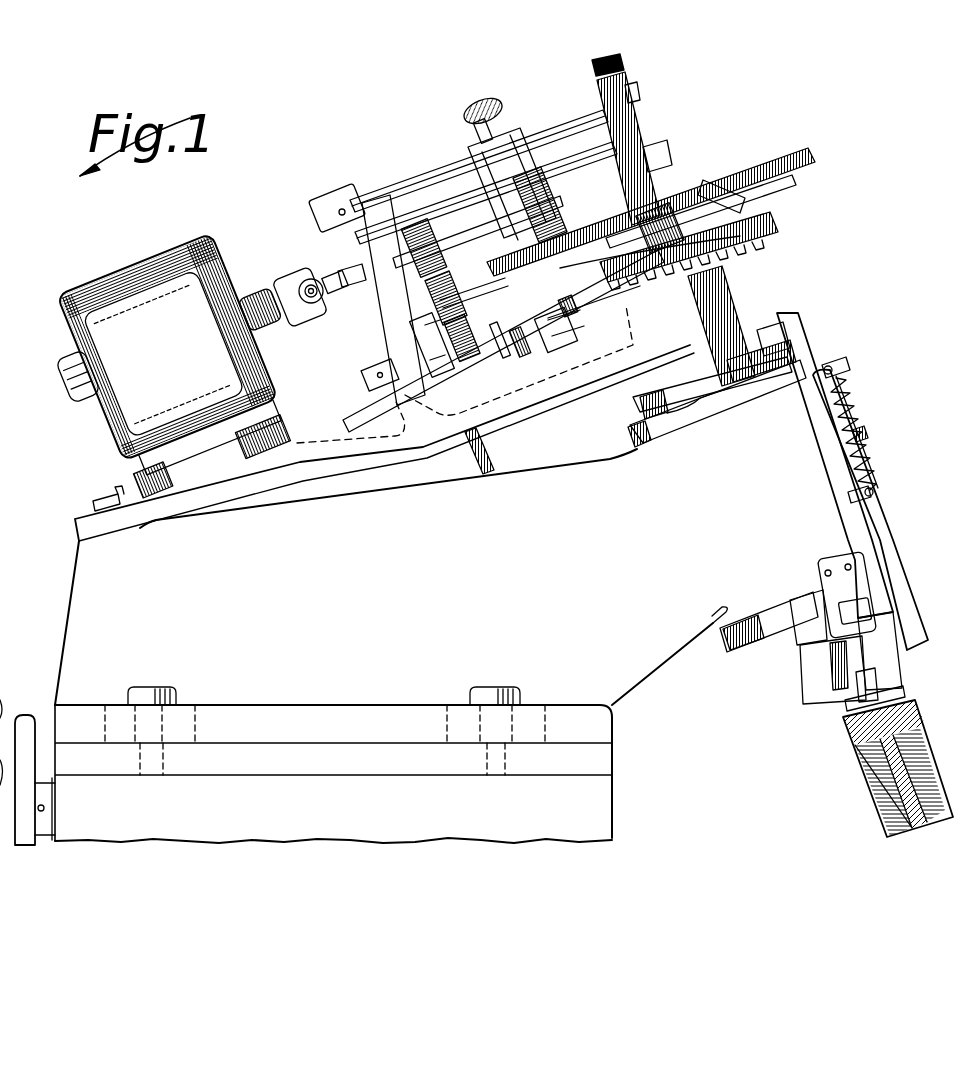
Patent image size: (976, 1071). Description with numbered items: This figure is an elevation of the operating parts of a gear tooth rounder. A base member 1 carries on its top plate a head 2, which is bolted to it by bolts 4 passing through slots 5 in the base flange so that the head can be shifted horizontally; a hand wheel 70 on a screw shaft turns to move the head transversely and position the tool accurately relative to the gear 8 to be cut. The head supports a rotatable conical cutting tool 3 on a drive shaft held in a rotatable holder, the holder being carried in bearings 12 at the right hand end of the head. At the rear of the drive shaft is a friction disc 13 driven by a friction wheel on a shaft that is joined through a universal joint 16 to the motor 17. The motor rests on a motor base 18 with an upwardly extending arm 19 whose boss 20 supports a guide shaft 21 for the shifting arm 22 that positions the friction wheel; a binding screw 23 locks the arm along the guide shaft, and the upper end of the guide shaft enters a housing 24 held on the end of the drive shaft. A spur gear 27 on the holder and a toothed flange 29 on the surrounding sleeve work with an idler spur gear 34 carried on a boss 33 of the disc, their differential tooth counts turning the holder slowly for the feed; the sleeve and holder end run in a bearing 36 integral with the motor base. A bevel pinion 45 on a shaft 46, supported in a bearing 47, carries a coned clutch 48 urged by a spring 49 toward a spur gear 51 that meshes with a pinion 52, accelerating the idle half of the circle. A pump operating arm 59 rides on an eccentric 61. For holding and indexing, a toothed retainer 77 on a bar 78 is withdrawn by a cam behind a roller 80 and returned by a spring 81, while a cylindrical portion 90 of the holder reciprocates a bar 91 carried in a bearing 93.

The base member 1 is at (333, 774).
The head 2 is at (384, 577).
The cutting tool 3 is at (843, 717).
The bolts 4 is at (495, 690).
The slots 5 is at (540, 712).
The gear 8 is at (905, 700).
The bearings 12 is at (713, 626).
The friction disc 13 is at (785, 160).
The universal joint 16 is at (292, 272).
The motor 17 is at (179, 366).
The motor base 18 is at (300, 440).
The arm 19 is at (365, 338).
The boss 20 is at (336, 198).
The guide shaft 21 is at (440, 170).
The shifting arm 22 is at (517, 135).
The binding screw 23 is at (492, 108).
The housing 24 is at (640, 122).
The spur gear 27 is at (665, 215).
The toothed flange 29 is at (800, 350).
The boss 33 is at (755, 198).
The idler spur gear 34 is at (750, 235).
The bearing 36 is at (732, 298).
The bevel pinion 45 is at (560, 305).
The shaft 46 is at (515, 340).
The bearing 47 is at (565, 340).
The coned clutch 48 is at (458, 318).
The spring 49 is at (500, 325).
The spur gear 51 is at (440, 290).
The pinion 52 is at (425, 232).
The pump operating arm 59 is at (490, 450).
The eccentric 61 is at (418, 330).
The hand wheel 70 is at (28, 715).
The retainer 77 is at (900, 670).
The bar 78 is at (815, 340).
The roller 80 is at (770, 330).
The spring 81 is at (858, 392).
The cylindrical portion 90 is at (760, 640).
The bar 91 is at (872, 611).
The bearing 93 is at (822, 585).